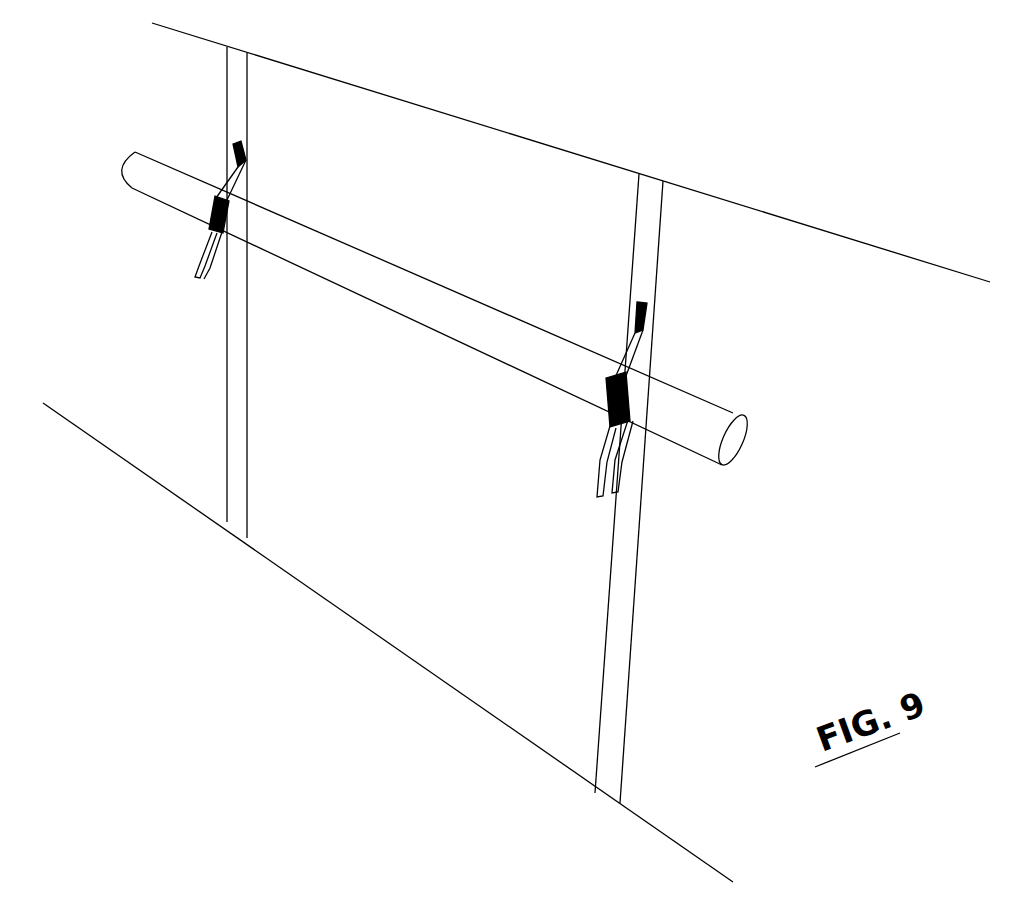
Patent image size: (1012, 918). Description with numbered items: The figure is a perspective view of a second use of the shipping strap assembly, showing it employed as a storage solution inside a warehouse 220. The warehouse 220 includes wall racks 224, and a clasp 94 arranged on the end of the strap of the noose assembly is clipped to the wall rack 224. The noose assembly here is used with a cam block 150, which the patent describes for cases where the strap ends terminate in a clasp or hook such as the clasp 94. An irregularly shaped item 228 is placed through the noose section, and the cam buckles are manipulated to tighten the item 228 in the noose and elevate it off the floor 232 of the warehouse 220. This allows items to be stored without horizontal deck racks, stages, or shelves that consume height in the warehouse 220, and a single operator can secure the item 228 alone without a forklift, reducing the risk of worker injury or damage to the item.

The warehouse 220 is at (522, 150).
The wall rack 224 is at (243, 92).
The irregularly shaped item 228 is at (395, 287).
The clasp 94 is at (248, 160).
The cam block 150 is at (202, 208).
The floor 232 is at (227, 678).